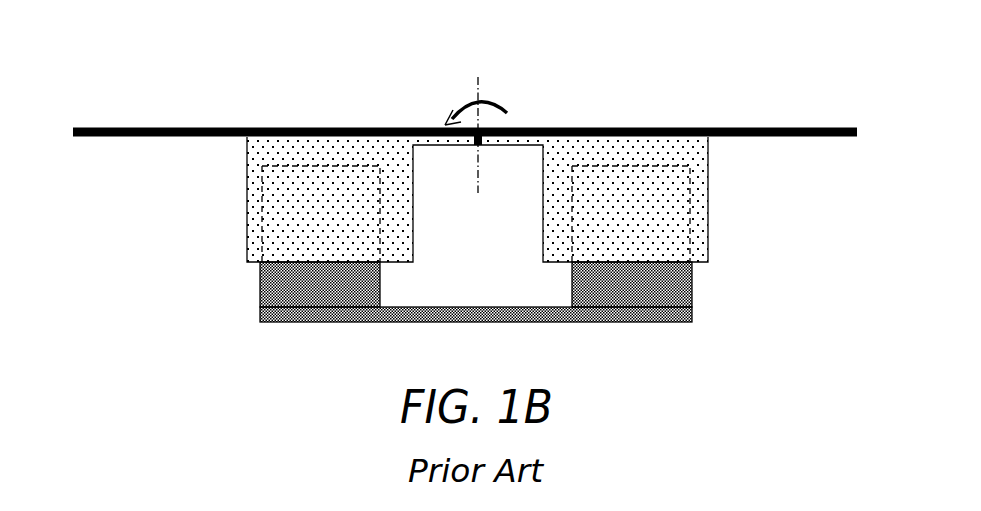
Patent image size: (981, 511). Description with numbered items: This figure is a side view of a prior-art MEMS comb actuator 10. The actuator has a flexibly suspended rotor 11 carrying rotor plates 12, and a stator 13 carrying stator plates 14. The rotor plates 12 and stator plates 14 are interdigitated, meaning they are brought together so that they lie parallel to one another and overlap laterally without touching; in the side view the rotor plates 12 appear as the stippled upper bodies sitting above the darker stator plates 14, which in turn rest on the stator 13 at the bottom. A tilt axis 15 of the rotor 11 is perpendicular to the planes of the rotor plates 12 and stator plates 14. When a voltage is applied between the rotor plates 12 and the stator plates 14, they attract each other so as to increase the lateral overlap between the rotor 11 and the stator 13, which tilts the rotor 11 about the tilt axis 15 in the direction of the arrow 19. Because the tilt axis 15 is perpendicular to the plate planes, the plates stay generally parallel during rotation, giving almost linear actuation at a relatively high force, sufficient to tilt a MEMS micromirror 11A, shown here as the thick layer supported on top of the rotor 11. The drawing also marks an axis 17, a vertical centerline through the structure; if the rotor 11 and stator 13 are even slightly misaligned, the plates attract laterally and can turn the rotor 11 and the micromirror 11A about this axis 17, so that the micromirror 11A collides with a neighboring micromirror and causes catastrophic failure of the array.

The MEMS comb actuator 10 is at (777, 218).
The rotor 11 is at (243, 153).
The MEMS micromirror 11A is at (734, 127).
The rotor plates 12 is at (248, 227).
The stator 13 is at (425, 305).
The stator plates 14 is at (260, 282).
The tilt axis 15 is at (468, 147).
The axis 17 is at (480, 86).
The arrow 19 is at (465, 101).